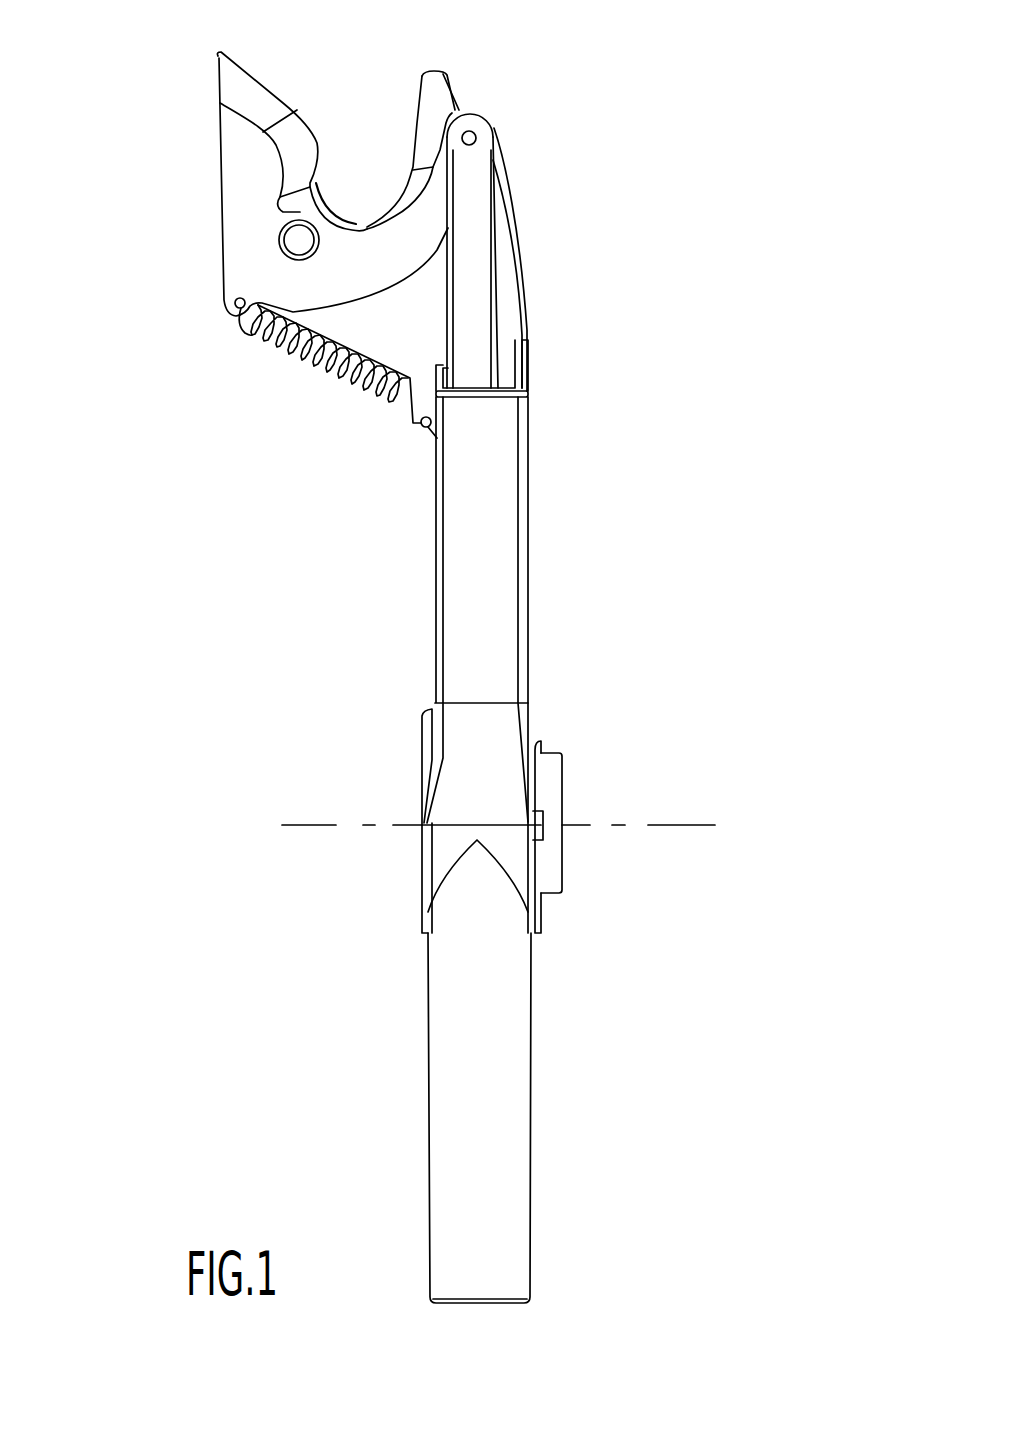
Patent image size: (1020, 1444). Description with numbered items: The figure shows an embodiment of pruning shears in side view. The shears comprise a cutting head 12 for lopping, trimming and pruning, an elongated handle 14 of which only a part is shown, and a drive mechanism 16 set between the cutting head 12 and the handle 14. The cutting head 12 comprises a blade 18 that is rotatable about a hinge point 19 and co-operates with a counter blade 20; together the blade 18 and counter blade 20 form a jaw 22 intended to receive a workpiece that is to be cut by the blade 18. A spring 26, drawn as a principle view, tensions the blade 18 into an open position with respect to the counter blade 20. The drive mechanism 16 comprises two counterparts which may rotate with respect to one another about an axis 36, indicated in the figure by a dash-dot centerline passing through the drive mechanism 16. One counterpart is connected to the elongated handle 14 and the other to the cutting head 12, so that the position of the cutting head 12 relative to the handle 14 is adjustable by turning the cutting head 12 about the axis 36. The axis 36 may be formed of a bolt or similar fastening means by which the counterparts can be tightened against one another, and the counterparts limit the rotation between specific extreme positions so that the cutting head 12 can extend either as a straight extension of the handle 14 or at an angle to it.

The cutting head 12 is at (572, 300).
The elongated handle 14 is at (510, 1168).
The drive mechanism 16 is at (578, 783).
The blade 18 is at (235, 210).
The hinge point 19 is at (298, 240).
The counter blade 20 is at (437, 102).
The jaw 22 is at (343, 167).
The spring 26 is at (270, 352).
The axis 36 is at (676, 824).